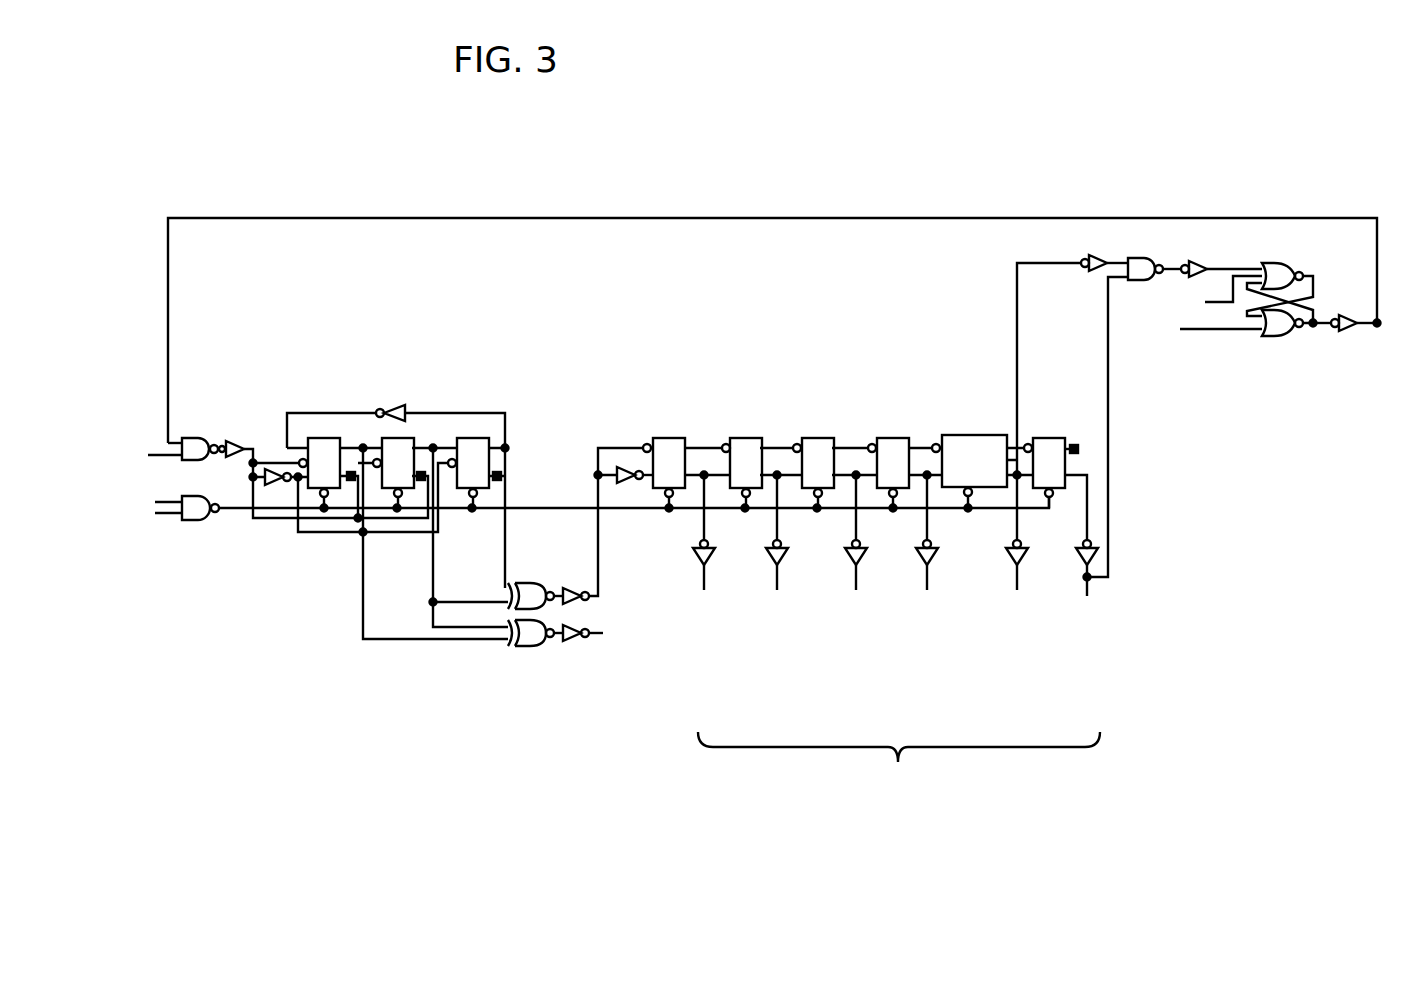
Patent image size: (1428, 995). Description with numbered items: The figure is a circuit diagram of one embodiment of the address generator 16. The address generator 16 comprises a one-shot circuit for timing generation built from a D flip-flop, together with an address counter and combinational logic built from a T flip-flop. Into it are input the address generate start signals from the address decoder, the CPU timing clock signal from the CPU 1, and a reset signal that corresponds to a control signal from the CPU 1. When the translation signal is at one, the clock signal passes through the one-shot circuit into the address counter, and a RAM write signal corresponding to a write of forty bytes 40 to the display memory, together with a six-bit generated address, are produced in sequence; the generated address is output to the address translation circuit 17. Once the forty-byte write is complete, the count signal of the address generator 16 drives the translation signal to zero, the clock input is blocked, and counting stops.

The address generator 16 is at (728, 408).
The address translation circuit 17 is at (937, 774).
The CRAMW40 write control output 40 is at (598, 644).
The CPU 1 is at (778, 592).